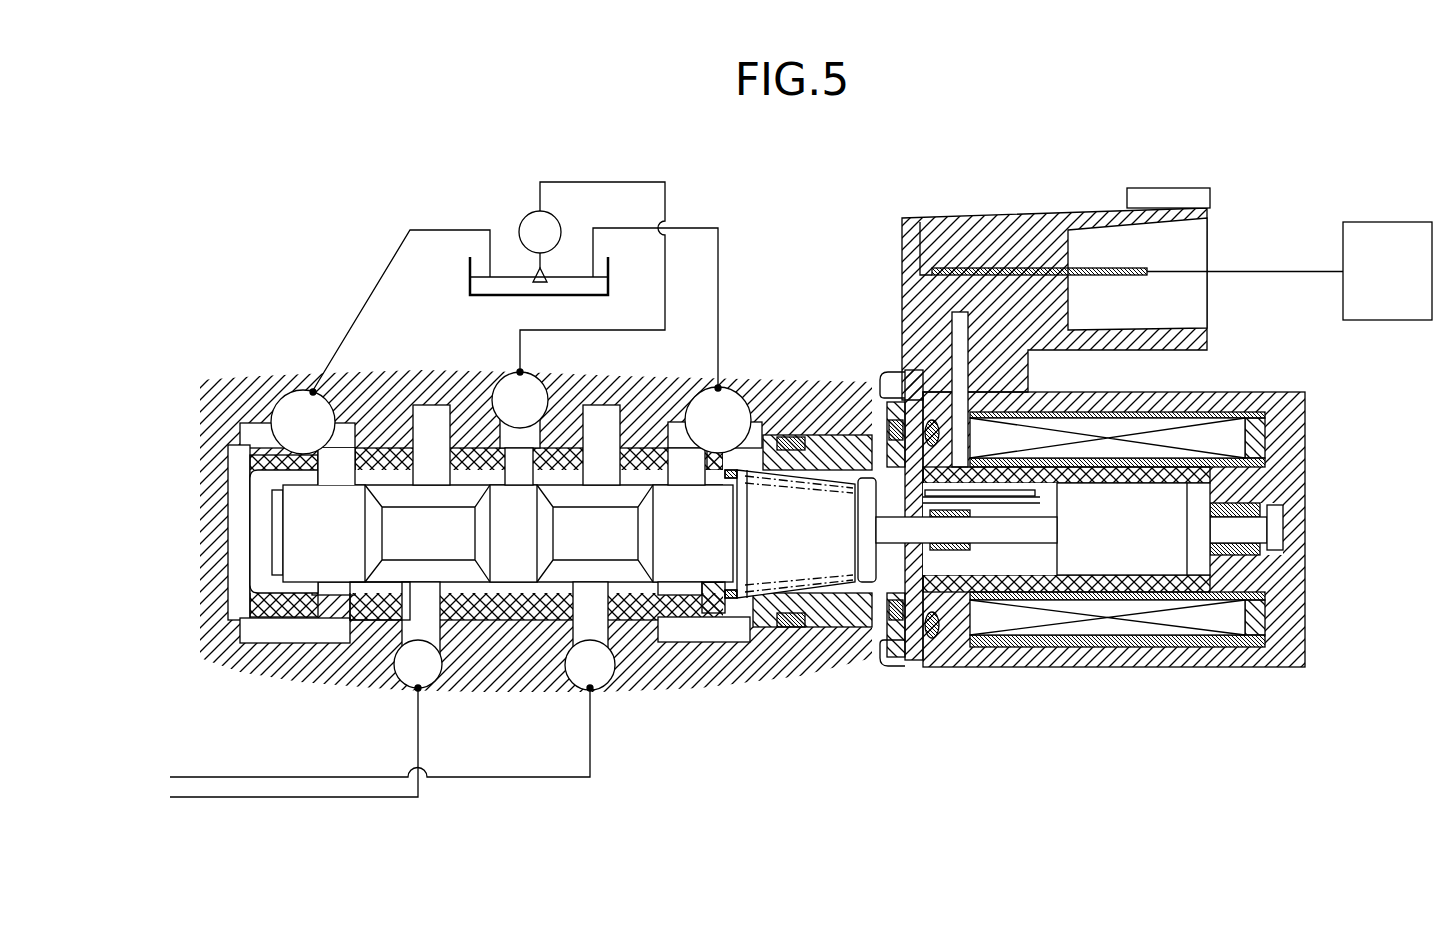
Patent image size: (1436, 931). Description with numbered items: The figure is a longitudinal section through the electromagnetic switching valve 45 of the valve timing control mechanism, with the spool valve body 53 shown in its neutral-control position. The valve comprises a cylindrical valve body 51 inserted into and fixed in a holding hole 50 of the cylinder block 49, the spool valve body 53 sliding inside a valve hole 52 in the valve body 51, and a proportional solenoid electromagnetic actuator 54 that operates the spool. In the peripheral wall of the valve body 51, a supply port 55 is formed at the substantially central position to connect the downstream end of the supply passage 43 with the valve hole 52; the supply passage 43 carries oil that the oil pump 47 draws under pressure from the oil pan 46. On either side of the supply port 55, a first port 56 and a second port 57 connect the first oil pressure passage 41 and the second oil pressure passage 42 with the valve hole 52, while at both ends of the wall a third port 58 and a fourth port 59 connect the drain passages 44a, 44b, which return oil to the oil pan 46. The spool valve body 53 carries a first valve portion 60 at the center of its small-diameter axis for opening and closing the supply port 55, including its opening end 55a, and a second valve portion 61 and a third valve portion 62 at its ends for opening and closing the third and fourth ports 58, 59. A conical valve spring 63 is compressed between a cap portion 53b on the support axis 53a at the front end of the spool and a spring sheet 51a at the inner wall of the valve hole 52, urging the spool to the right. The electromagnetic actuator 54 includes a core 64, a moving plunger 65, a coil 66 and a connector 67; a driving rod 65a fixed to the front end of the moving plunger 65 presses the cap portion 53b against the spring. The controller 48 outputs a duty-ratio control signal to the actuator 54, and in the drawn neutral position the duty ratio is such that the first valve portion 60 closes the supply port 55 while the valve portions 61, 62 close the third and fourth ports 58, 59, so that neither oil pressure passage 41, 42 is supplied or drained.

The first oil pressure passage 41 is at (215, 776).
The second oil pressure passage 42 is at (315, 800).
The supply passage 43 is at (605, 182).
The first drain passage 44a is at (720, 250).
The second drain passage 44b is at (342, 338).
The electromagnetic switching valve 45 is at (272, 497).
The oil pan 46 is at (470, 283).
The oil pump 47 is at (526, 220).
The controller 48 is at (1386, 222).
The cylinder block 49 is at (861, 665).
The holding hole 50 is at (825, 618).
The valve body 51 is at (620, 603).
The spring sheet 51a is at (728, 480).
The valve hole 52 is at (567, 568).
The spool valve body 53 is at (390, 566).
The support axis 53a is at (835, 520).
The cap portion 53b is at (852, 560).
The electromagnetic actuator 54 is at (1241, 670).
The supply port 55 is at (503, 475).
The opening end 55a is at (517, 595).
The first port 56 is at (597, 467).
The second port 57 is at (428, 470).
The third port 58 is at (683, 463).
The fourth port 59 is at (337, 470).
The first valve portion 60 is at (543, 503).
The second valve portion 61 is at (672, 560).
The third valve portion 62 is at (303, 550).
The valve spring 63 is at (713, 597).
The core 64 is at (1010, 573).
The moving plunger 65 is at (1158, 552).
The driving rod 65a is at (943, 530).
The coil 66 is at (1098, 634).
The connector 67 is at (1100, 250).